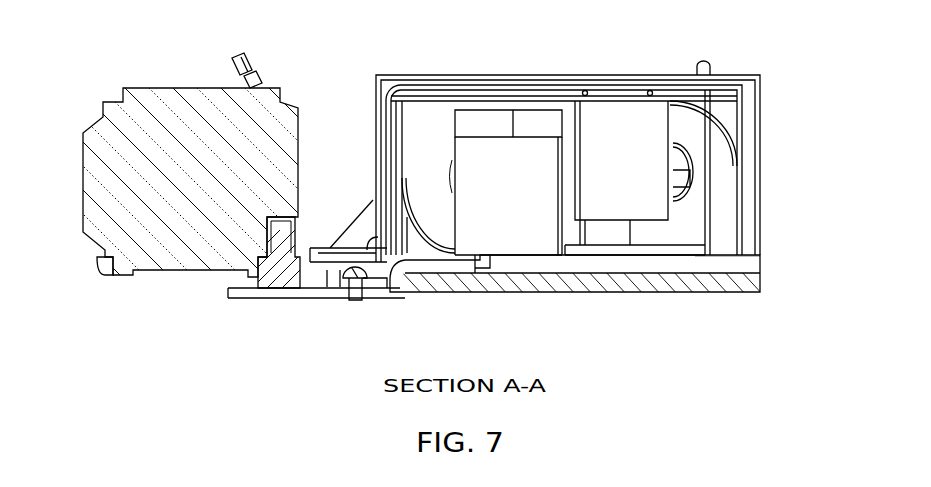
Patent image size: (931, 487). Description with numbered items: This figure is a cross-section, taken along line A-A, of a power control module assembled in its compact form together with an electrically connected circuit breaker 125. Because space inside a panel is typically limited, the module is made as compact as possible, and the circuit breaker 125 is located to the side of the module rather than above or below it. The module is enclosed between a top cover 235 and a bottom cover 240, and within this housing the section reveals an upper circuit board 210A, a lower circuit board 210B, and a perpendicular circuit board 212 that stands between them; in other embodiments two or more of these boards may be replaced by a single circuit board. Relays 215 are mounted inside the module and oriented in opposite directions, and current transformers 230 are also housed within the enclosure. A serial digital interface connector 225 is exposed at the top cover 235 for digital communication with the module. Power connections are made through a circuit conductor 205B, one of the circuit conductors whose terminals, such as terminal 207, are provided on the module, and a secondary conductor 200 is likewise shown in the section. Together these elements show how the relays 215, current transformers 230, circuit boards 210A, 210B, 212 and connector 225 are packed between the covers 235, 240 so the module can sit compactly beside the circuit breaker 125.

The circuit breaker 125 is at (150, 88).
The terminal 207 is at (390, 292).
The circuit conductor 205B is at (450, 278).
The bottom cover 240 is at (760, 272).
The top cover 235 is at (762, 75).
The perpendicular circuit board 212 is at (714, 228).
The upper circuit board 210A is at (537, 96).
The lower circuit board 210B is at (602, 256).
The current transformer 230 is at (453, 96).
The relay 215 is at (628, 101).
The serial digital interface connector 225 is at (712, 60).
The secondary conductor 200 is at (685, 240).